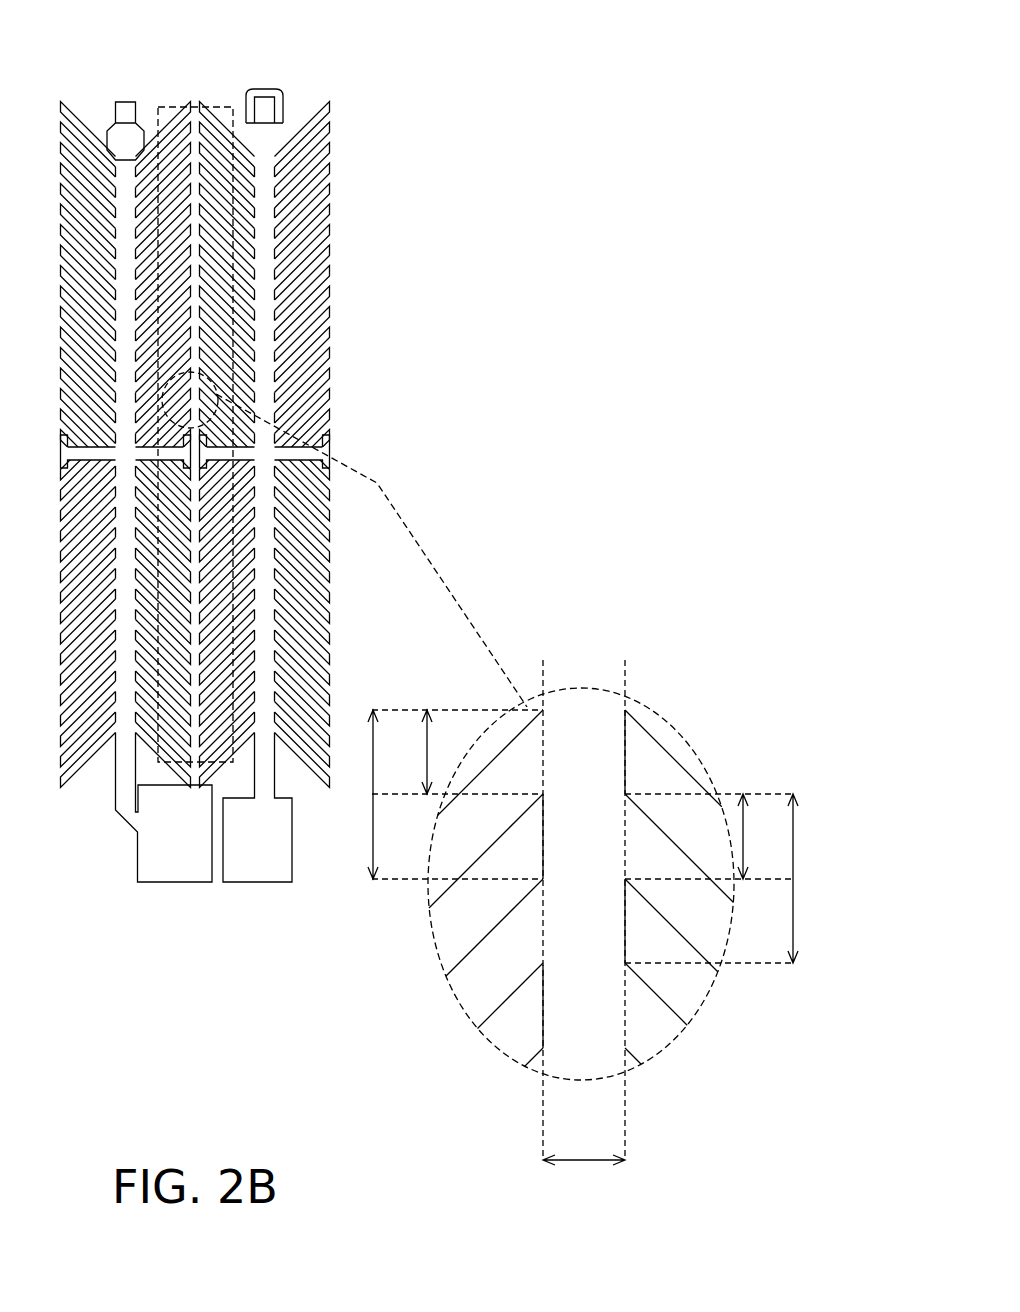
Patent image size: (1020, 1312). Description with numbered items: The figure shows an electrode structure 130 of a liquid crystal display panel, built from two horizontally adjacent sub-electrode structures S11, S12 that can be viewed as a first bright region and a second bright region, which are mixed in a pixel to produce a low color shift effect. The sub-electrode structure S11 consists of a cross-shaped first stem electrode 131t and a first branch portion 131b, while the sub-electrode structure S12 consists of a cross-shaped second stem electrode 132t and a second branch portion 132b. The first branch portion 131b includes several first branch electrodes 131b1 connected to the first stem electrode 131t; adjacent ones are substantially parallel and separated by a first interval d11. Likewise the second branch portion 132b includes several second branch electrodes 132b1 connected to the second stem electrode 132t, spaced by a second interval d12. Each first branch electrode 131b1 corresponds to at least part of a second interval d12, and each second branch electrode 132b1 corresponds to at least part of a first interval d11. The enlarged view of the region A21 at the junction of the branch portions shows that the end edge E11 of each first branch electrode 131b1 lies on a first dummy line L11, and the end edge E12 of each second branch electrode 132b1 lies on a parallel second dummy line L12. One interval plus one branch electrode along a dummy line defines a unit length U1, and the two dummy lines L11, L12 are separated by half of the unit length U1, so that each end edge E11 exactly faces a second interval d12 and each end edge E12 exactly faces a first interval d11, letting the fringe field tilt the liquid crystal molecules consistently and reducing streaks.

The electrode structure 130 is at (715, 57).
The sub-electrode structure S11 is at (97, 80).
The sub-electrode structure S12 is at (270, 80).
The first stem electrode 131t is at (125, 100).
The second stem electrode 132t is at (268, 160).
The region A21 is at (198, 104).
The first branch portion 131b is at (508, 1103).
The first branch electrodes 131b1 is at (503, 1028).
The second branch portion 132b is at (818, 1093).
The second branch electrodes 132b1 is at (727, 885).
The end edge E11 is at (545, 833).
The end edge E12 is at (619, 734).
The first dummy line L11 is at (530, 931).
The second dummy line L12 is at (632, 931).
The unit length U1 is at (583, 836).
The first interval d11 is at (411, 752).
The second interval d12 is at (767, 836).